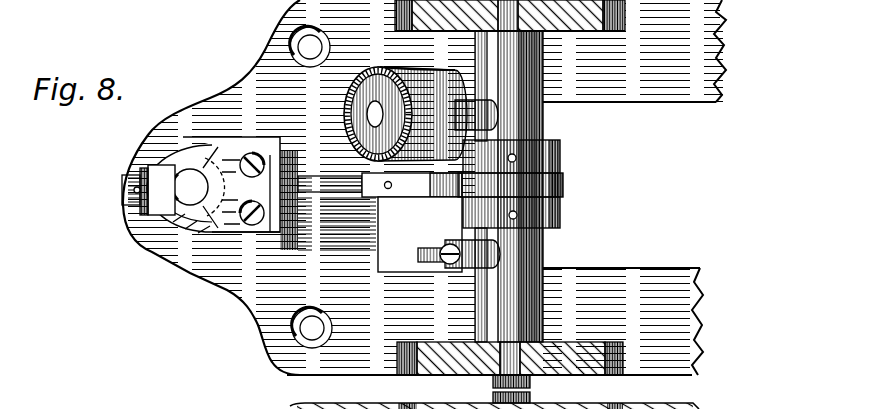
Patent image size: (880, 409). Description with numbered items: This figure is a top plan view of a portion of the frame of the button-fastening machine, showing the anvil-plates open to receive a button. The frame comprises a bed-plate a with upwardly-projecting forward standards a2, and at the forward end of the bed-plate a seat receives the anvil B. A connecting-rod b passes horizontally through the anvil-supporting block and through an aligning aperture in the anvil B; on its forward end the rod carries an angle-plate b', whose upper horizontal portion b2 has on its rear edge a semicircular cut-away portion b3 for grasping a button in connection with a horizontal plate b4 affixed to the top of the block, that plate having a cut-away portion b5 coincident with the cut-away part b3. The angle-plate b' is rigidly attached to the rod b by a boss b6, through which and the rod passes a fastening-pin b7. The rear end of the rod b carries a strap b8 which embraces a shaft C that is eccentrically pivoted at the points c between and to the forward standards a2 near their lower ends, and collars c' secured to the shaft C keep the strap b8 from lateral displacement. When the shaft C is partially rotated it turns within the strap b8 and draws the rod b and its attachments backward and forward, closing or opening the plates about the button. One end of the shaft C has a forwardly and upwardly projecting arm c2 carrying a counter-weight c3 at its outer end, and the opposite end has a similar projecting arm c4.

The bed-plate a is at (440, 204).
The forward standard a2 is at (437, 343).
The anvil B is at (190, 187).
The connecting-rod b is at (380, 174).
The angle-plate b' is at (199, 194).
The upper horizontal portion of angle-plate b2 is at (160, 166).
The semicircular cut-away portion b3 is at (140, 207).
The horizontal plate b4 is at (266, 173).
The cut-away portion b5 is at (212, 183).
The boss b6 is at (123, 185).
The fastening-pin b7 is at (125, 195).
The strap b8 is at (566, 181).
The shaft C is at (460, 187).
The pivot point c is at (508, 383).
The collar c' is at (522, 184).
The projecting arm c2 is at (497, 117).
The counter-weight c3 is at (352, 122).
The projecting arm c4 is at (450, 250).